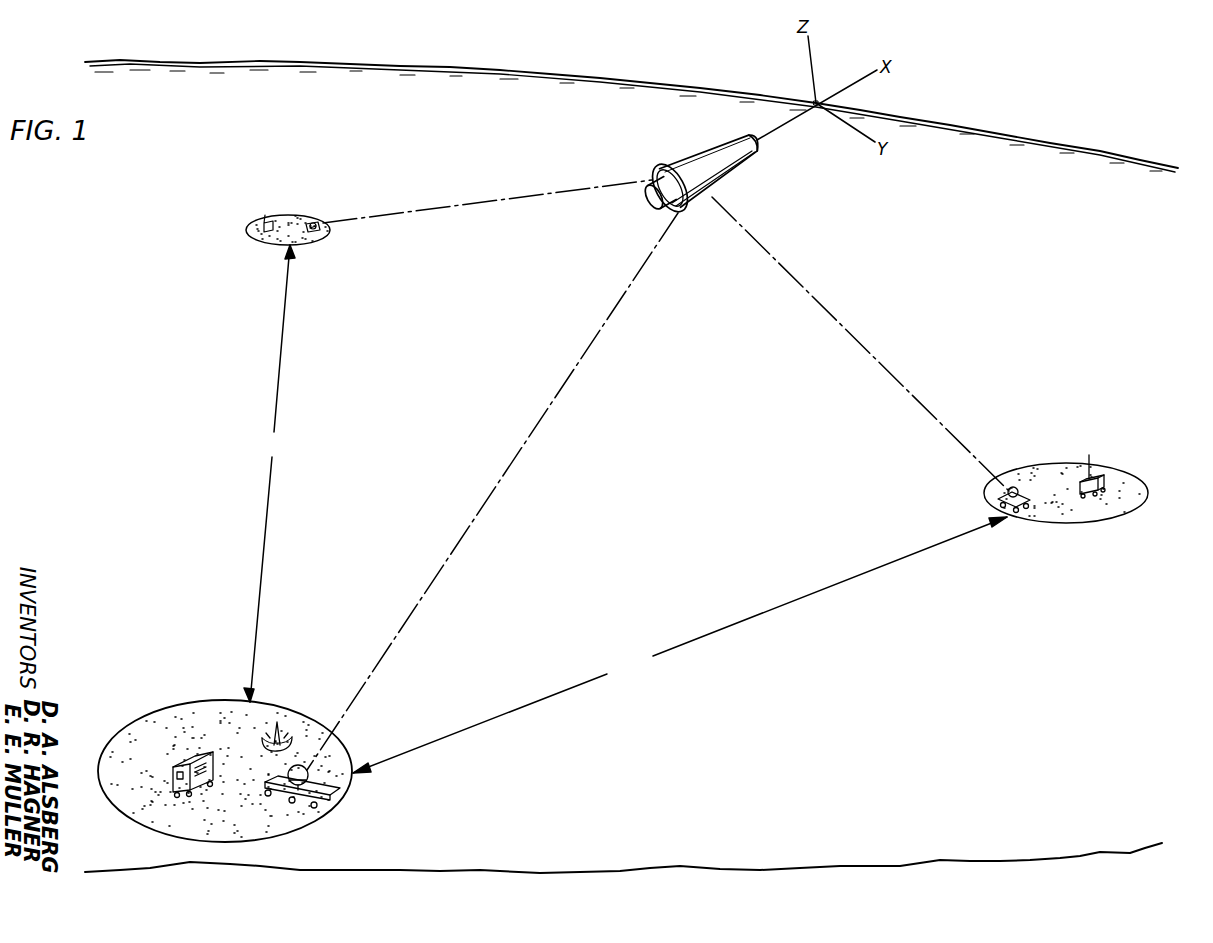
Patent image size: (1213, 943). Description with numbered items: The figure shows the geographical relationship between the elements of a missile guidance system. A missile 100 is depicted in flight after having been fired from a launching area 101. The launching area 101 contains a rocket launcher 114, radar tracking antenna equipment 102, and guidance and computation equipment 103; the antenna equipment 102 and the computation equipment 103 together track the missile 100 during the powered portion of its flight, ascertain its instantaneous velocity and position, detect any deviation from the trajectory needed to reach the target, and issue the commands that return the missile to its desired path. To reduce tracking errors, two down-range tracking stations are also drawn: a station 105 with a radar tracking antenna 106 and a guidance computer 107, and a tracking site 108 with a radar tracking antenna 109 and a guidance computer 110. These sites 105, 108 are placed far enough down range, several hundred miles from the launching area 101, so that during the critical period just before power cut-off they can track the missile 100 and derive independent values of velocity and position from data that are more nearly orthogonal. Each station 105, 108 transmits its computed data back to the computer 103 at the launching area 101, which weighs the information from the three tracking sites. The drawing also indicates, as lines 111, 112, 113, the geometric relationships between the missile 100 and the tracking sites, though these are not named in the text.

The missile 100 is at (699, 156).
The launching area 101 is at (297, 828).
The radar tracking antenna equipment 102 is at (318, 793).
The guidance and computation equipment 103 is at (213, 770).
The station 105 is at (1087, 525).
The radar tracking antenna 106 is at (1007, 495).
The guidance computer 107 is at (1100, 480).
The tracking site 108 is at (310, 247).
The radar tracking antenna 109 is at (313, 222).
The guidance computer 110 is at (269, 221).
The baseline between ground stations 111 is at (780, 607).
The satellite-to-ground transmission path 112 is at (533, 428).
The baseline between ground stations 113 is at (266, 525).
The rocket launcher 114 is at (288, 735).